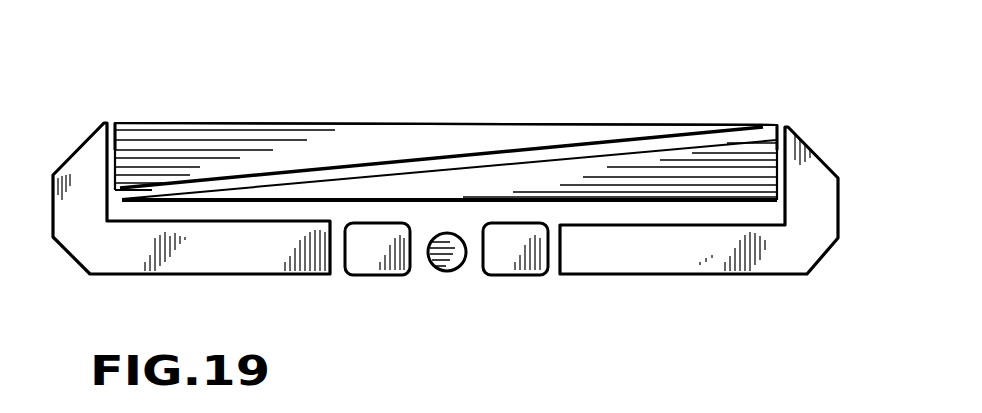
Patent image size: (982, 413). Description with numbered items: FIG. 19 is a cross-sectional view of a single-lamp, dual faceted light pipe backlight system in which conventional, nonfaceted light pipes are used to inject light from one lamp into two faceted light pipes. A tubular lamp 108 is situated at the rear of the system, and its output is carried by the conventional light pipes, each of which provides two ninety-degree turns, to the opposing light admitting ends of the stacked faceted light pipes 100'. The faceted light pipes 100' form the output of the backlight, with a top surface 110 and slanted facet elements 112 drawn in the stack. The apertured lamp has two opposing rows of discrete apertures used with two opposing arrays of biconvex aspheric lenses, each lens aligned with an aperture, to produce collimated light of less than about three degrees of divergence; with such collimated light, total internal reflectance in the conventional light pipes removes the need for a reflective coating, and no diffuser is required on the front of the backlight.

The faceted light pipe 100' is at (446, 130).
The tubular lamp 108 is at (436, 262).
The top surface 110 is at (357, 122).
The wedge member 112 is at (437, 155).